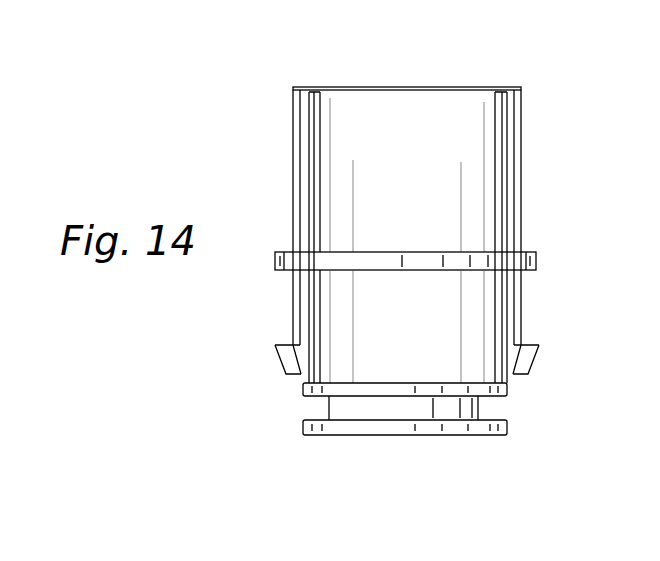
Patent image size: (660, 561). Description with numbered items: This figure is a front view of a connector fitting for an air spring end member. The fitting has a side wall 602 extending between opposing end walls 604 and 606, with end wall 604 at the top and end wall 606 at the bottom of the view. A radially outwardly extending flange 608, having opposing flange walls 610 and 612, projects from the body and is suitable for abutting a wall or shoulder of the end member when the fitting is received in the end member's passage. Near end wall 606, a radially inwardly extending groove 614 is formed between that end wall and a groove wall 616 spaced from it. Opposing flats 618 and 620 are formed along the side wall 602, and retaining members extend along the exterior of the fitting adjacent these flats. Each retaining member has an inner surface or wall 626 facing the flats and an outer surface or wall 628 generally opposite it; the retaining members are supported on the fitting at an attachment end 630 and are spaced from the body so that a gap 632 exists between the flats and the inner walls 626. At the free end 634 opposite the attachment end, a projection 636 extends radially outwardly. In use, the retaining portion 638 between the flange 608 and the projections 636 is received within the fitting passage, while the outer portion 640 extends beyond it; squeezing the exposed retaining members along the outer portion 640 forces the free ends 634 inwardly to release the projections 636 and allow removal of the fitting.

The side wall 602 is at (423, 172).
The end wall 604 is at (403, 87).
The end wall 606 is at (327, 433).
The radially outwardly extending flange 608 is at (543, 258).
The flange wall 610 is at (433, 251).
The flange wall 612 is at (435, 271).
The radially inwardly extending groove 614 is at (486, 410).
The groove wall 616 is at (318, 393).
The flat 618 is at (322, 136).
The flat 620 is at (492, 135).
The inner surface or wall 626 is at (500, 158).
The outer surface or wall 628 is at (521, 180).
The attachment end 630 is at (531, 86).
The gap 632 is at (321, 323).
The free end 634 is at (540, 373).
The projection 636 is at (283, 358).
The retaining portion 638 is at (270, 270).
The outer portion 640 is at (270, 88).